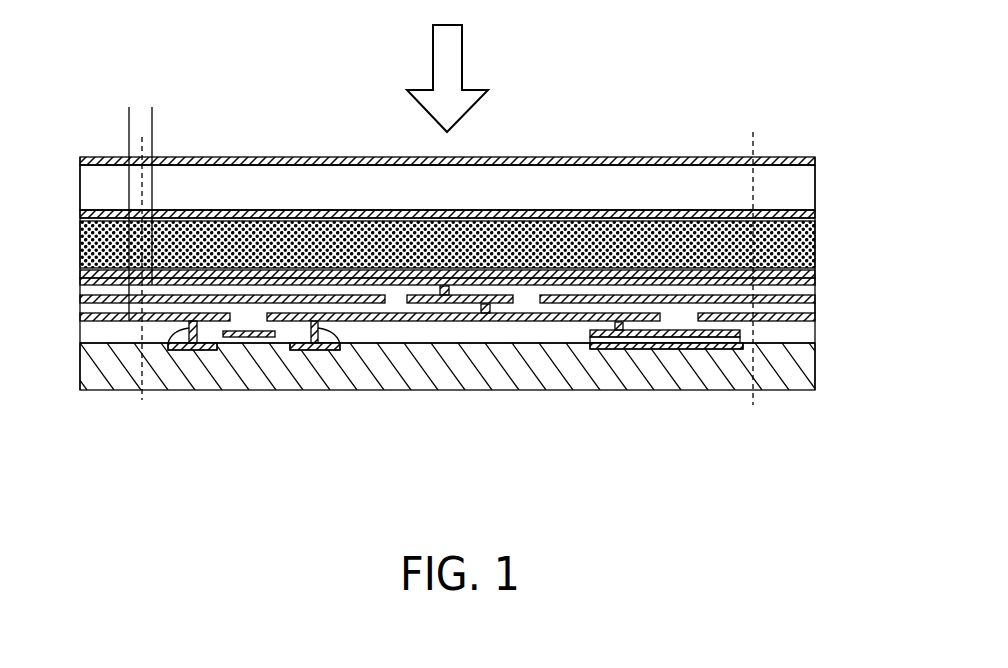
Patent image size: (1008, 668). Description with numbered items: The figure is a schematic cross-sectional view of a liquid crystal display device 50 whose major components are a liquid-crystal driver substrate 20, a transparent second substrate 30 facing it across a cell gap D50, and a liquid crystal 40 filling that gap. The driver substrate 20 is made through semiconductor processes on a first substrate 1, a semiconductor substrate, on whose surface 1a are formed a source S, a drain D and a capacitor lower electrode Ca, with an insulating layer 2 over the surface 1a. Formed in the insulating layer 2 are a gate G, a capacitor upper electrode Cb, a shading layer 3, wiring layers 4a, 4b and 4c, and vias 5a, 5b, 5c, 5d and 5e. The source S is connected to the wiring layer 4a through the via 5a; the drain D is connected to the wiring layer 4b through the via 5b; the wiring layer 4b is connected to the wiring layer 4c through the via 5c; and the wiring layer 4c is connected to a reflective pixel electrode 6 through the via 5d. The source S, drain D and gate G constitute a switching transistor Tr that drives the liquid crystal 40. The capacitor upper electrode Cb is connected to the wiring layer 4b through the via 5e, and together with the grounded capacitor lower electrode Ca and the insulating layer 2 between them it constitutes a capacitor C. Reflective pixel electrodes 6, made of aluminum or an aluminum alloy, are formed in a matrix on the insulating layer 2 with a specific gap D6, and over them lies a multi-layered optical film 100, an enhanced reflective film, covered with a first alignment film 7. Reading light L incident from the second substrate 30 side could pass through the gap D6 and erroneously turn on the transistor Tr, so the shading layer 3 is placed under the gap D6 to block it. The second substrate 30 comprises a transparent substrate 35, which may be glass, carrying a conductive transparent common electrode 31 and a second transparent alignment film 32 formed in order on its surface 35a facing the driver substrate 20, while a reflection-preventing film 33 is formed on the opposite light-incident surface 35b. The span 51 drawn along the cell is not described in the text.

The first substrate 1 is at (805, 370).
The surface of the first substrate 1a is at (813, 336).
The insulating layer 2 is at (813, 308).
The shading layer 3 is at (400, 302).
The wiring layer 4a is at (100, 321).
The wiring layer 4b is at (390, 302).
The wiring layer 4c is at (525, 300).
The via 5a is at (170, 338).
The via 5b is at (328, 381).
The via 5c is at (487, 311).
The via 5d is at (444, 294).
The via 5e is at (612, 326).
The reflective pixel electrode 6 is at (813, 283).
The first alignment film 7 is at (811, 272).
The liquid-crystal driver substrate 20 is at (67, 272).
The second substrate 30 is at (67, 152).
The common electrode 31 is at (810, 213).
The second transparent alignment film 32 is at (812, 216).
The reflection-preventing film 33 is at (818, 162).
The transparent substrate 35 is at (807, 180).
The surface of the transparent substrate 35a is at (810, 208).
The light-incident surface 35b is at (818, 167).
The liquid crystal 40 is at (807, 242).
The liquid crystal display device 50 is at (797, 89).
The pixel pitch 51 is at (142, 140).
The multi-layered optical film 100 is at (670, 284).
The switching transistor Tr is at (241, 398).
The source S is at (207, 351).
The gate G is at (250, 338).
The drain D is at (293, 351).
The capacitor C is at (702, 406).
The capacitor lower electrode Ca is at (739, 336).
The capacitor upper electrode Cb is at (745, 348).
The reading light L is at (447, 78).
The gap between pixel electrodes D6 is at (180, 117).
The cell gap D50 is at (78, 220).